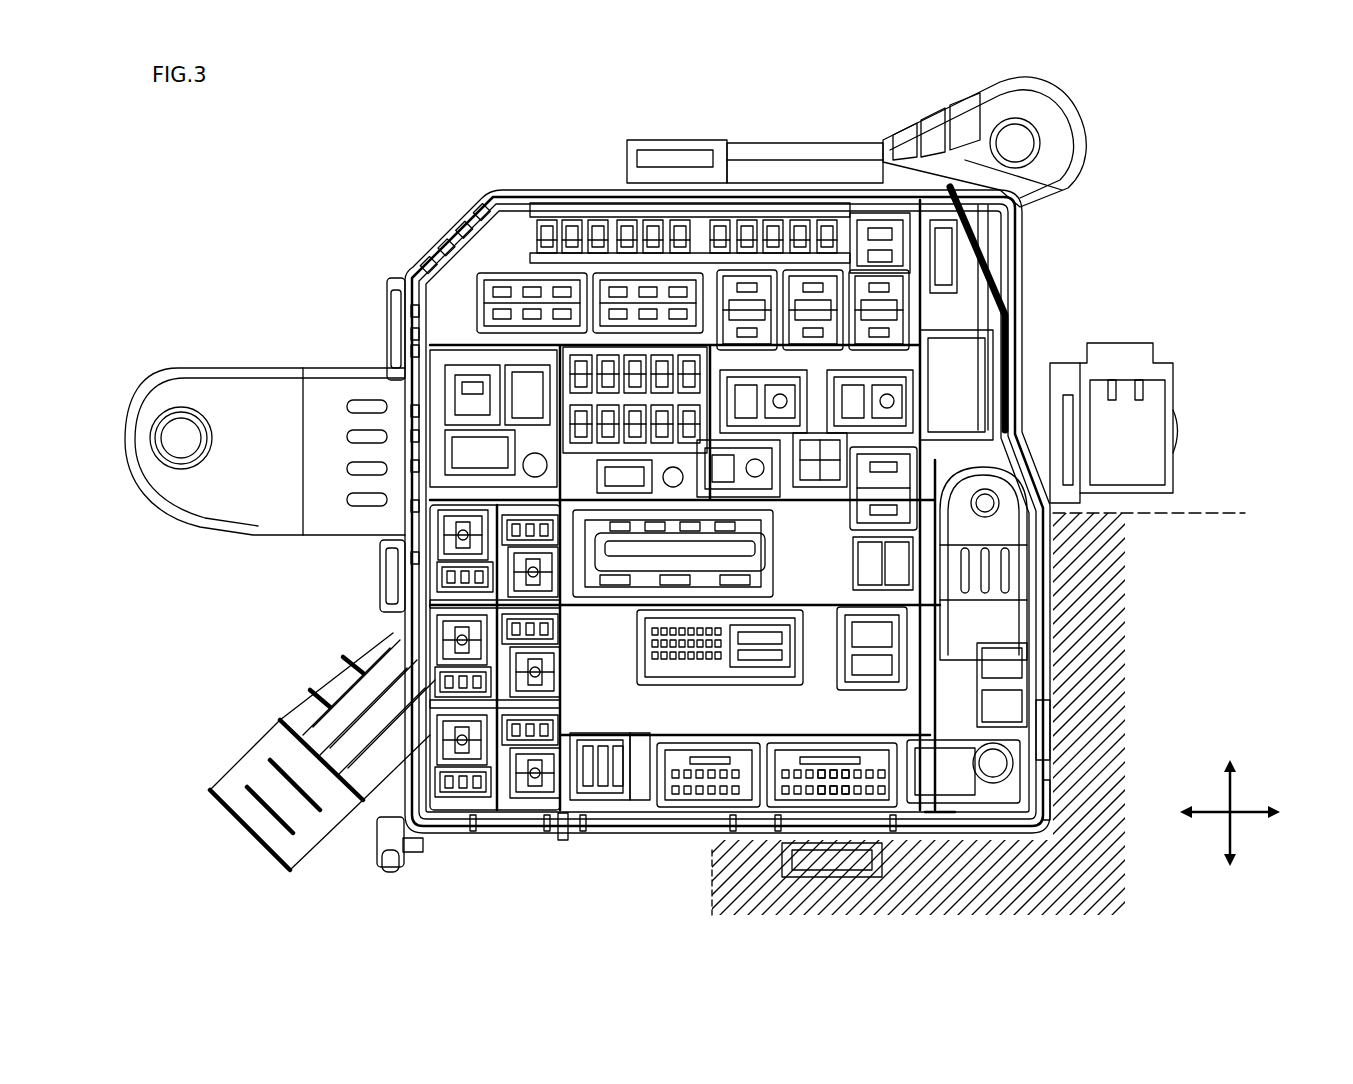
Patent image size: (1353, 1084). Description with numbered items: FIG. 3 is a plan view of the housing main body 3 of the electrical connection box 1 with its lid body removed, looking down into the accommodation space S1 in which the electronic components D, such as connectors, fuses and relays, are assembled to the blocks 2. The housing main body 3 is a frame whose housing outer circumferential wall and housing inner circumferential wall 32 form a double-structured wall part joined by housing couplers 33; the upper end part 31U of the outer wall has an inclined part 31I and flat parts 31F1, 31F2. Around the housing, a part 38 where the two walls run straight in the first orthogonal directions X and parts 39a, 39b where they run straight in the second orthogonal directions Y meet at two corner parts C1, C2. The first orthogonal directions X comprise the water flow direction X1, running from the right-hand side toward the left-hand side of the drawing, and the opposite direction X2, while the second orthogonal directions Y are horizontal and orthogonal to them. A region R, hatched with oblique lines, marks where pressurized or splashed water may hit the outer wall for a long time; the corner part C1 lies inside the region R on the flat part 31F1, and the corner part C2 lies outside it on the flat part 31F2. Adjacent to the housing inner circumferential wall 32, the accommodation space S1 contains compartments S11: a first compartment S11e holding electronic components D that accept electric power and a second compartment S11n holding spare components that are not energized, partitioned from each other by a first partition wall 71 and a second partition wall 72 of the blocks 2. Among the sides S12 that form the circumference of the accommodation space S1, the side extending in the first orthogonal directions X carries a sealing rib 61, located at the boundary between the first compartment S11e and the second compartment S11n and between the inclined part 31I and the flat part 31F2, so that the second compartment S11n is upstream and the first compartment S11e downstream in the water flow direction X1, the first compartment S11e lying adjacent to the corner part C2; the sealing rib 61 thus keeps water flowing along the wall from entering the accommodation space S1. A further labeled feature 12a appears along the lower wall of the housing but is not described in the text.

The electrical connection box 1 is at (438, 163).
The blocks 2 is at (480, 193).
The housing main body 3 is at (423, 252).
The upper end part of housing outer circumferential wall 31U is at (427, 252).
The housing inner circumferential wall 32 is at (432, 288).
The housing couplers 33 is at (392, 373).
The accommodation space S1 is at (513, 218).
The sides S12 is at (607, 223).
The electronic components D is at (610, 220).
The compartments S11 is at (808, 752).
The second compartment S11n is at (437, 677).
The first compartment S11e is at (603, 727).
The first partition wall 71 is at (425, 730).
The second partition wall 72 is at (653, 717).
The sealing rib 61 is at (563, 843).
The part extending in second orthogonal directions 39a is at (1060, 672).
The part extending in second orthogonal directions 39b is at (400, 787).
The flat part 31F1 is at (1042, 828).
The flat part 31F2 is at (514, 848).
The inclined part 31I is at (625, 835).
The bottom wall portion 12a is at (940, 833).
The part extending in first orthogonal directions 38 is at (980, 825).
The corner part C1 is at (1055, 820).
The corner part C2 is at (397, 835).
The region R is at (1150, 563).
The first orthogonal directions X is at (1200, 810).
The second orthogonal directions Y is at (1240, 795).
The water flow direction X1 is at (1208, 820).
The opposite direction X2 is at (1255, 820).